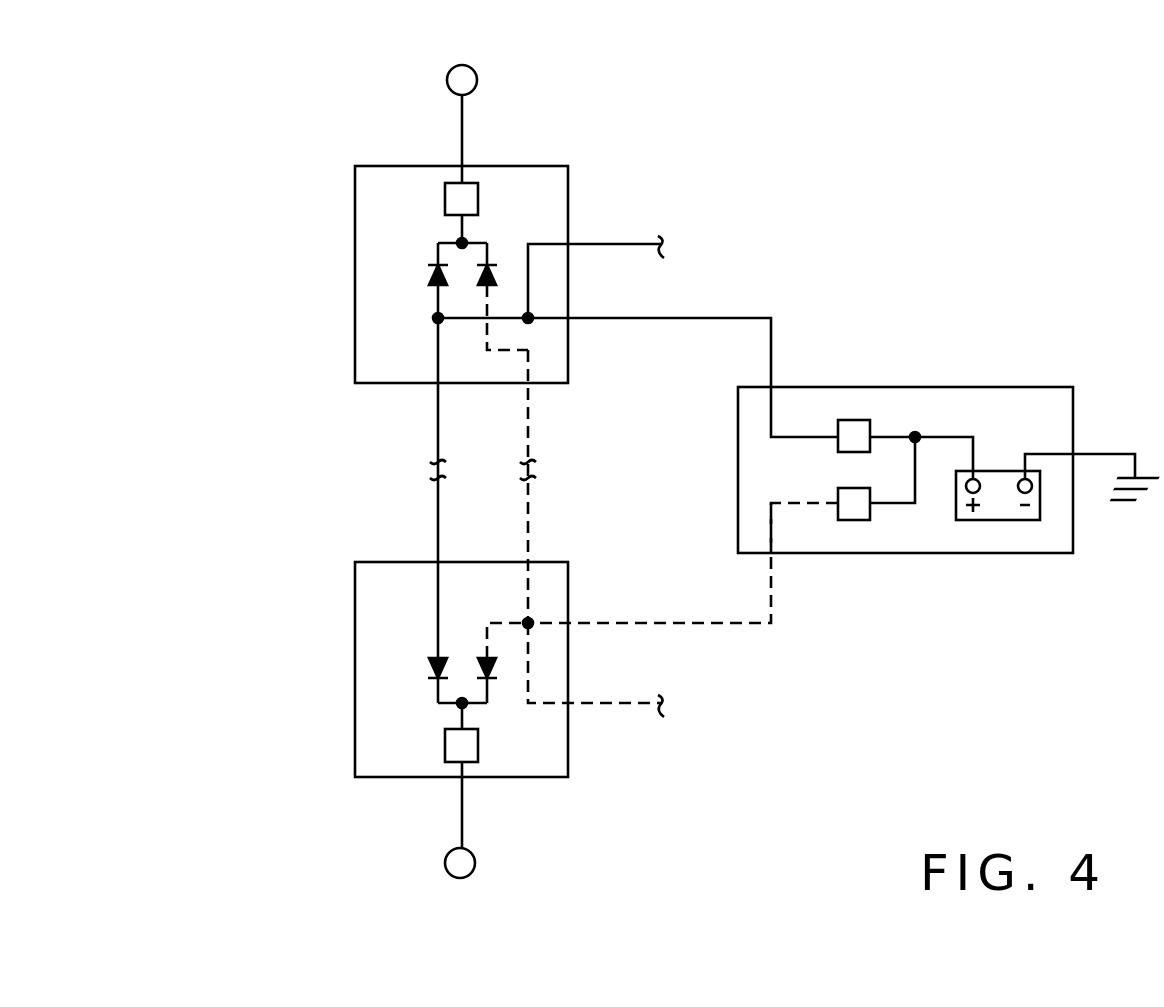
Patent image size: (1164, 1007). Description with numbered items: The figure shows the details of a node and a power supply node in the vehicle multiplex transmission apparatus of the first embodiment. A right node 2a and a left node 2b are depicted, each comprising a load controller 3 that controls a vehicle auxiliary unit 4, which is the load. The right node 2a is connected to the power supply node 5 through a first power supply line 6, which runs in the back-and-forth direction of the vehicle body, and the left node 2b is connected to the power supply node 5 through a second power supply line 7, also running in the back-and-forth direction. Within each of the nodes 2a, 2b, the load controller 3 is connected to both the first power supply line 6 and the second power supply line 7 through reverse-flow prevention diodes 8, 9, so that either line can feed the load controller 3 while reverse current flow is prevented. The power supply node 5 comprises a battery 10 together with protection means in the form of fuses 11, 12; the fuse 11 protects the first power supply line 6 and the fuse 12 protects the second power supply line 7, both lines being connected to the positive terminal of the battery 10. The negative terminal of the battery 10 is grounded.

The right node 2a is at (526, 166).
The left node 2b is at (518, 778).
The load controller 3 is at (445, 196).
The vehicle auxiliary unit 4 is at (446, 860).
The power supply node 5 is at (1004, 390).
The first power supply line 6 is at (717, 318).
The second power supply line 7 is at (693, 626).
The reverse-flow prevention diode 8 is at (428, 280).
The reverse-flow prevention diode 9 is at (492, 270).
The battery 10 is at (958, 506).
The fuse 11 is at (848, 416).
The fuse 12 is at (838, 520).